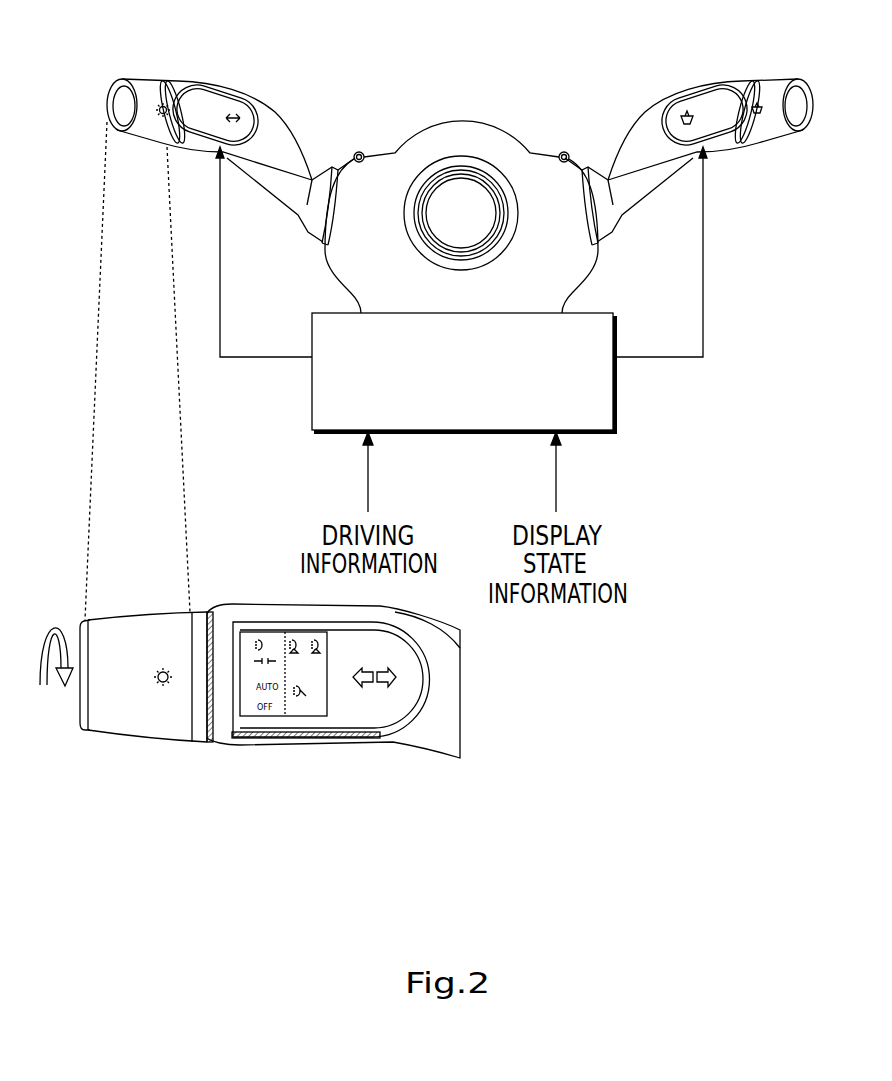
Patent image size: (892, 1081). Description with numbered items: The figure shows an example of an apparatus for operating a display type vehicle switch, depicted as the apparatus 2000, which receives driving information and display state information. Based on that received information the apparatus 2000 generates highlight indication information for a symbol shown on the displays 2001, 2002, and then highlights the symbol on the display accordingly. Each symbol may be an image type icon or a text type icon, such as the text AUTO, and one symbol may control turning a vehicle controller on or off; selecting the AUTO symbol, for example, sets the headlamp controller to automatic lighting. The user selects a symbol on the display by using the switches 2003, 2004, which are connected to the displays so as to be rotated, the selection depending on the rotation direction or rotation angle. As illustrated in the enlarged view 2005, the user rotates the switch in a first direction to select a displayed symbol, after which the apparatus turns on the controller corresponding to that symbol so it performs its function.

The apparatus for operating a display type vehicle switch 2000 is at (460, 434).
The display 2001 is at (211, 102).
The display 2002 is at (705, 96).
The switch 2003 is at (116, 79).
The switch 2004 is at (776, 83).
The rotation example of the switch 2005 is at (124, 632).